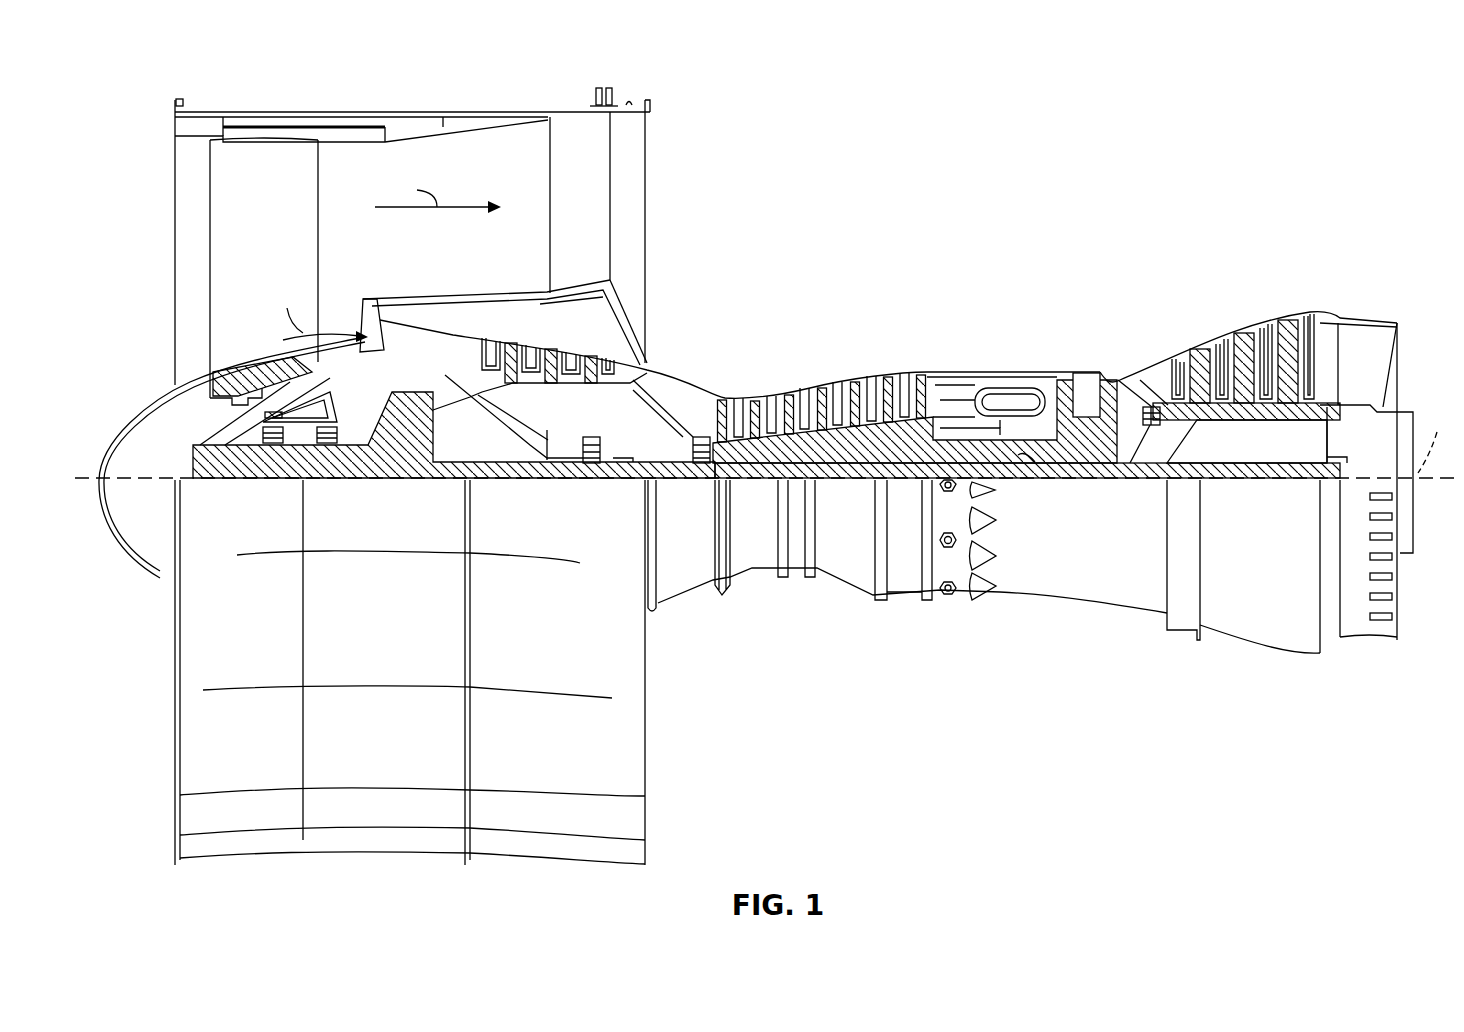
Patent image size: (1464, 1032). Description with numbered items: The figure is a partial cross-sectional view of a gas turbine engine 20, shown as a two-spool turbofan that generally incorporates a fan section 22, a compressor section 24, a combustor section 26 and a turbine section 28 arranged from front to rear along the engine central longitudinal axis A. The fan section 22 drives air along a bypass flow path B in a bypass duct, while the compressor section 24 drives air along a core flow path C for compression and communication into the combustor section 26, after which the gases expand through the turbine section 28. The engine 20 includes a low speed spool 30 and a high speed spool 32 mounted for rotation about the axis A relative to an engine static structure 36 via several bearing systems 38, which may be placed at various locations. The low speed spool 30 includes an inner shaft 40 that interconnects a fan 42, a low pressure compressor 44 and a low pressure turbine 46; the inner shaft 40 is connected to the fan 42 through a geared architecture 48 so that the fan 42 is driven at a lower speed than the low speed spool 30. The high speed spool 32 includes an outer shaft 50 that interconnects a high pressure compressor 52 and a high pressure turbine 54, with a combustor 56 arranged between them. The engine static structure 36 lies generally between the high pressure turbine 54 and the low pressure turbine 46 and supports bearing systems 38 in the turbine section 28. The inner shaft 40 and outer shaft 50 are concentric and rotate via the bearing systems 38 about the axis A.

The gas turbine engine 20 is at (1222, 146).
The fan section 22 is at (440, 88).
The compressor section 24 is at (838, 334).
The combustor section 26 is at (1000, 334).
The turbine section 28 is at (1154, 317).
The low speed spool 30 is at (866, 488).
The high speed spool 32 is at (925, 425).
The engine static structure 36 is at (904, 605).
The bearing systems 38 is at (277, 437).
The inner shaft 40 is at (661, 480).
The fan 42 is at (289, 237).
The low pressure compressor 44 is at (560, 357).
The low pressure turbine 46 is at (1253, 335).
The geared architecture 48 is at (414, 430).
The outer shaft 50 is at (1033, 470).
The high pressure compressor 52 is at (828, 445).
The high pressure turbine 54 is at (1088, 383).
The combustor 56 is at (1010, 400).